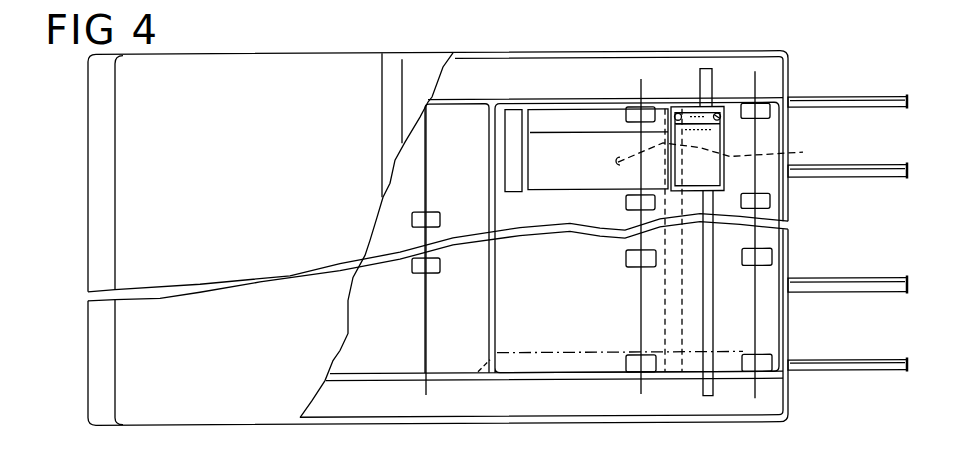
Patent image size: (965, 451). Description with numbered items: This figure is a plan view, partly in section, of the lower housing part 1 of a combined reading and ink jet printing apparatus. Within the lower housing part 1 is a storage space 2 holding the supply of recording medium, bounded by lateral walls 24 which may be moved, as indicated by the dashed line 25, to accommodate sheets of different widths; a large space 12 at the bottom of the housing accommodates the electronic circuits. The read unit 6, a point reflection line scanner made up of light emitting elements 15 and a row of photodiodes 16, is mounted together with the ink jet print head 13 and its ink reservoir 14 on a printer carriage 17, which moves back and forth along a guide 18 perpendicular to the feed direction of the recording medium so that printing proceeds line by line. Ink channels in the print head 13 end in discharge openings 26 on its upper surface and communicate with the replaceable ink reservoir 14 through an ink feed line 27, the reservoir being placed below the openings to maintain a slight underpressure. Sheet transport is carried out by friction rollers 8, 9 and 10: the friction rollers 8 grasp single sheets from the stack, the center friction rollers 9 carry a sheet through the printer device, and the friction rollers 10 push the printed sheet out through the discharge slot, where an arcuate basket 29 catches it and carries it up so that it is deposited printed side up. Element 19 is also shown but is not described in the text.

The lower housing part 1 is at (218, 77).
The storage space 2 is at (362, 99).
The read unit 6 is at (690, 115).
The friction rollers 8 is at (428, 270).
The friction rollers 9 is at (636, 365).
The friction rollers 10 is at (765, 363).
The space 12 is at (432, 197).
The print head 13 is at (712, 135).
The ink reservoir 14 is at (538, 212).
The light emitting elements 15 is at (677, 113).
The row of photodiodes 16 is at (716, 114).
The printer carriage 17 is at (800, 198).
The guide 18 is at (711, 80).
The spacer 19 is at (511, 96).
The lateral walls 24 is at (445, 345).
The dashed line 25 is at (546, 352).
The discharge openings 26 is at (722, 144).
The ink feed line 27 is at (721, 84).
The arcuate basket 29 is at (899, 109).